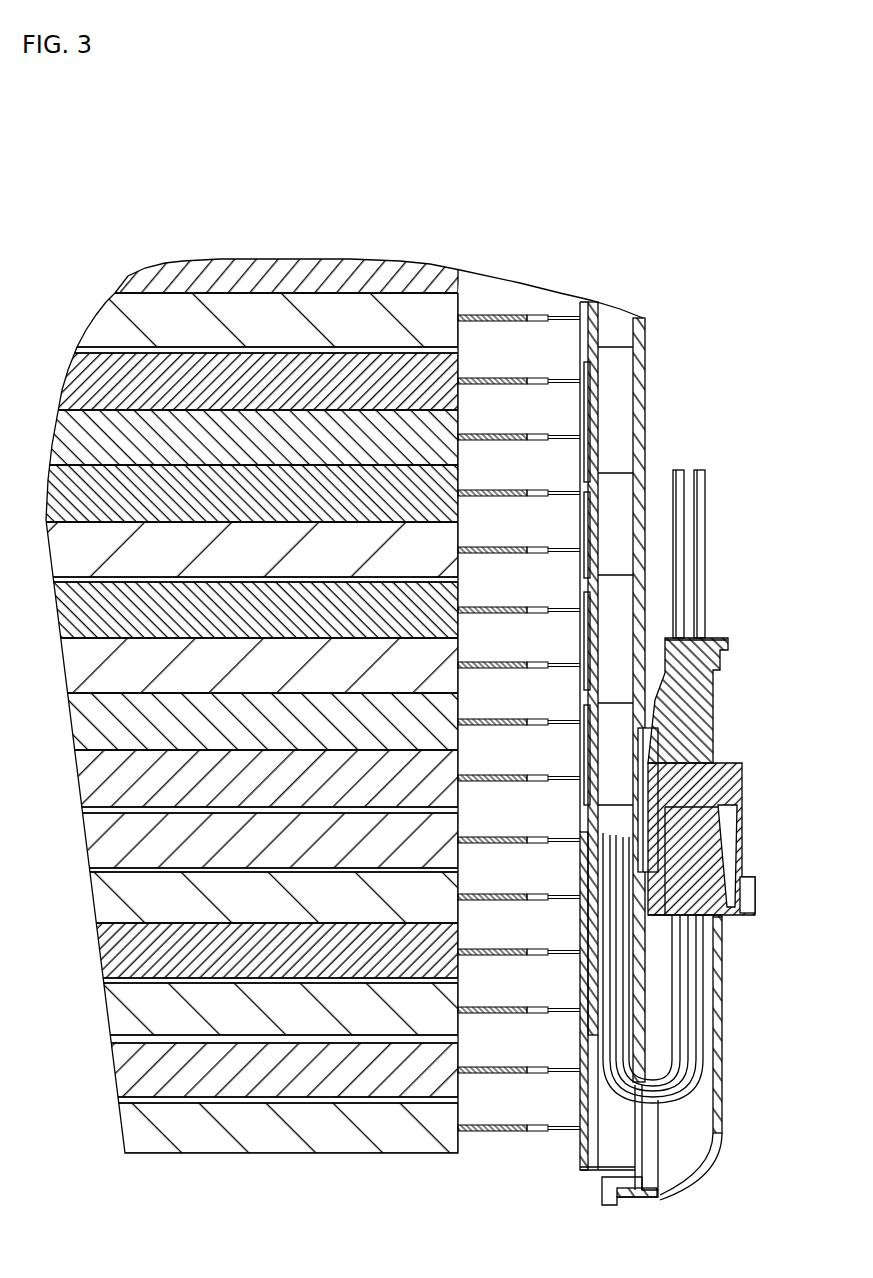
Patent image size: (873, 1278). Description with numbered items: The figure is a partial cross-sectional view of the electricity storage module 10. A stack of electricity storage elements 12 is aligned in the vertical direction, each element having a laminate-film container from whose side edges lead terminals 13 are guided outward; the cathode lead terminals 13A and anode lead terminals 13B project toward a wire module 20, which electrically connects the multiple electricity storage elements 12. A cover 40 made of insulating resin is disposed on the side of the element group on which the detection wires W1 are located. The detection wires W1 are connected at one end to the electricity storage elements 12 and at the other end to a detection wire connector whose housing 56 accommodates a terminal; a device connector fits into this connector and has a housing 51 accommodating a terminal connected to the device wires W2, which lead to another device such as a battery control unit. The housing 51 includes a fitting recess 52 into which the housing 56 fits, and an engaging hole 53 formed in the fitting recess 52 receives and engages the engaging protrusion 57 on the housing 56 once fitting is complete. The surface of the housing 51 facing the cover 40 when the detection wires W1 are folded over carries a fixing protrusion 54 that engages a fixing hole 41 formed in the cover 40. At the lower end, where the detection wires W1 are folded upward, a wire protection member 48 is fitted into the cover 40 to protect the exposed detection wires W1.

The electricity storage module 10 is at (568, 210).
The electricity storage element 12 is at (225, 472).
The lead terminal 13 is at (565, 382).
The cathode lead terminal 13A is at (565, 1010).
The anode lead terminal 13B is at (558, 952).
The wire module 20 is at (600, 368).
The cover 40 is at (645, 360).
The fixing hole 41 is at (655, 775).
The wire protection member 48 is at (717, 1155).
The housing 51 is at (713, 705).
The fitting recess 52 is at (722, 822).
The engaging hole 53 is at (740, 833).
The fixing protrusion 54 is at (742, 790).
The housing 56 is at (707, 913).
The engaging protrusion 57 is at (735, 853).
The detection wire W1 is at (678, 1025).
The device wire W2 is at (682, 512).